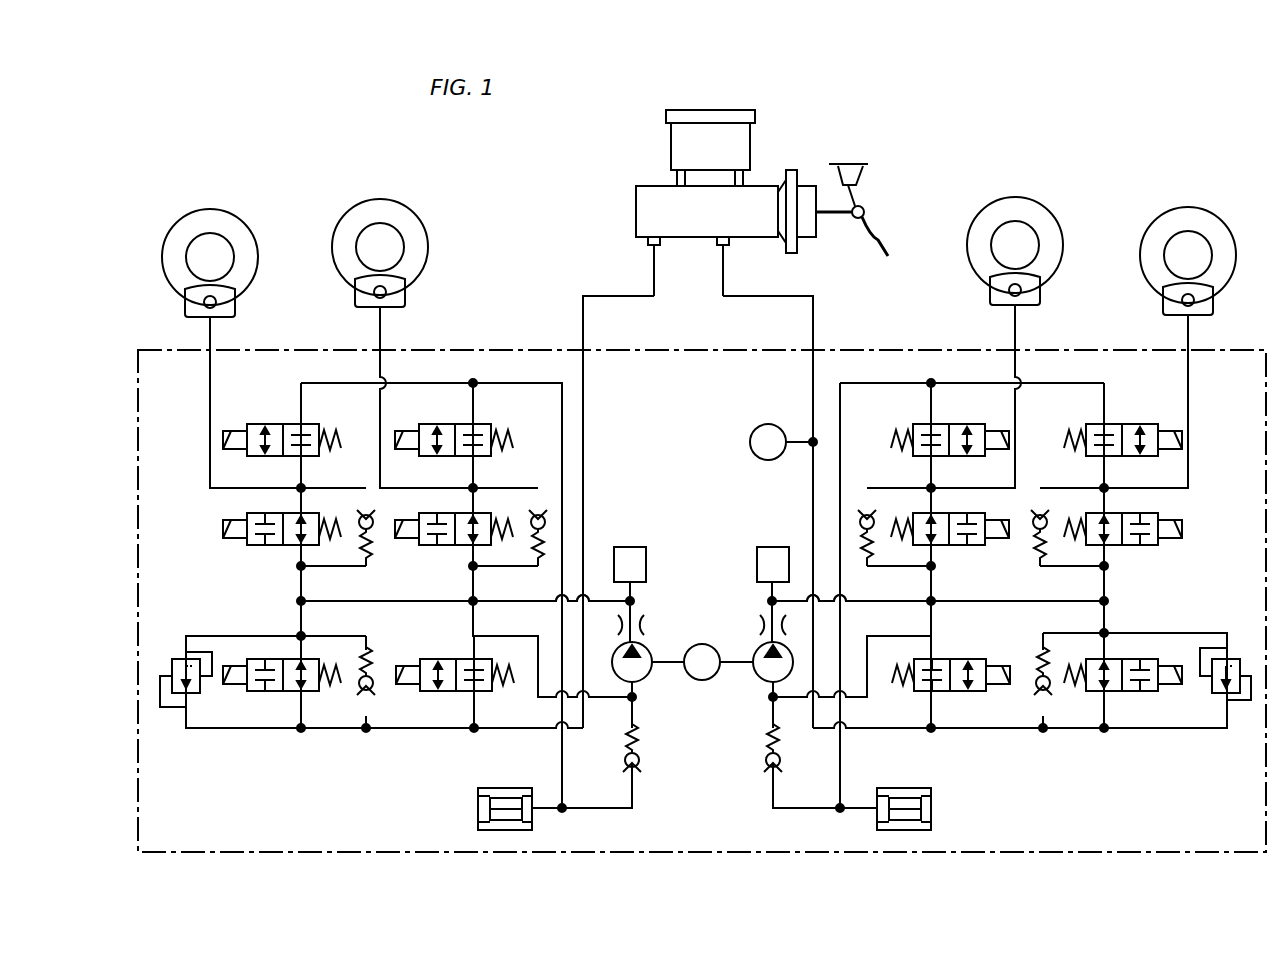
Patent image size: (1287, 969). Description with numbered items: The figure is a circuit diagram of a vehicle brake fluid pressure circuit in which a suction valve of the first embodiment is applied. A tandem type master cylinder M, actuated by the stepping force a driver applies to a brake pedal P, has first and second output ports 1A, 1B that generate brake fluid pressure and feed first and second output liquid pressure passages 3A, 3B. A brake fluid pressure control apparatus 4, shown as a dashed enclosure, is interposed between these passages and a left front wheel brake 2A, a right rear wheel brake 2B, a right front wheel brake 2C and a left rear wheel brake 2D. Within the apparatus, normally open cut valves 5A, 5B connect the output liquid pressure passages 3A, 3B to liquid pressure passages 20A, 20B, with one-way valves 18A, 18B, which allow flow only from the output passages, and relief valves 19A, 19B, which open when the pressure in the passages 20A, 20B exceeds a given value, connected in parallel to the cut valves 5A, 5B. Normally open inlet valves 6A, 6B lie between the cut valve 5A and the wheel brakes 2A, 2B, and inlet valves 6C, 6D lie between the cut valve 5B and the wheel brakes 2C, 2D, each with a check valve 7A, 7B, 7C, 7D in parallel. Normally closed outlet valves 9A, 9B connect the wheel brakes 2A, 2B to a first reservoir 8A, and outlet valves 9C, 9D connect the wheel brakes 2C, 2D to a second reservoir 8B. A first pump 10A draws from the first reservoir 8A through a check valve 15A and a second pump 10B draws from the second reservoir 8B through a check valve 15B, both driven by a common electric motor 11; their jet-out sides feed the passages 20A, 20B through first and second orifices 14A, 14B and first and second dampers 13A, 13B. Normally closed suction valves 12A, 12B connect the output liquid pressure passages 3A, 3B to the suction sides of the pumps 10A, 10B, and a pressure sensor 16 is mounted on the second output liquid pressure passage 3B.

The first output port 1A is at (650, 250).
The second output port 1B is at (729, 250).
The left front wheel brake 2A is at (203, 210).
The right rear wheel brake 2B is at (376, 197).
The right front wheel brake 2C is at (1193, 205).
The left rear wheel brake 2D is at (1019, 195).
The first output liquid pressure passage 3A is at (581, 312).
The second output liquid pressure passage 3B is at (815, 297).
The brake fluid pressure control apparatus 4 is at (447, 349).
The cut valve 5A is at (276, 692).
The cut valve 5B is at (1131, 692).
The inlet valve 6A is at (278, 546).
The inlet valve 6B is at (446, 546).
The inlet valve 6C is at (1139, 546).
The inlet valve 6D is at (961, 546).
The check valve 7A is at (369, 550).
The check valve 7B is at (540, 514).
The check valve 7C is at (1040, 514).
The check valve 7D is at (861, 514).
The first reservoir 8A is at (472, 790).
The second reservoir 8B is at (920, 790).
The outlet valve 9A is at (262, 423).
The outlet valve 9B is at (487, 424).
The outlet valve 9C is at (1126, 424).
The outlet valve 9D is at (940, 424).
The first pump 10A is at (648, 680).
The second pump 10B is at (757, 680).
The electric motor 11 is at (705, 681).
The suction valve 12A is at (432, 659).
The suction valve 12B is at (969, 659).
The first damper 13A is at (630, 546).
The second damper 13B is at (772, 546).
The first orifice 14A is at (645, 624).
The second orifice 14B is at (765, 624).
The check valve 15A is at (641, 770).
The check valve 15B is at (766, 770).
The pressure sensor 16 is at (756, 428).
The one-way valve 18A is at (376, 694).
The one-way valve 18B is at (1034, 692).
The relief valve 19A is at (180, 658).
The relief valve 19B is at (1235, 658).
The liquid pressure passage 20A is at (497, 603).
The liquid pressure passage 20B is at (1022, 602).
The master cylinder M is at (634, 205).
The brake pedal P is at (882, 233).